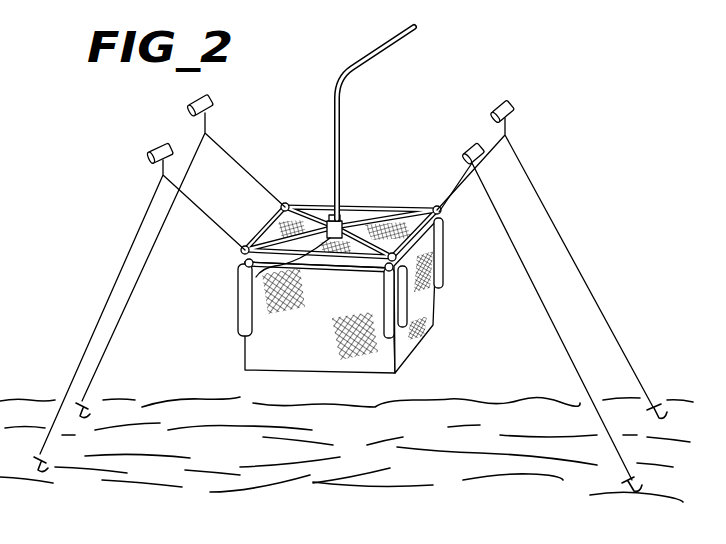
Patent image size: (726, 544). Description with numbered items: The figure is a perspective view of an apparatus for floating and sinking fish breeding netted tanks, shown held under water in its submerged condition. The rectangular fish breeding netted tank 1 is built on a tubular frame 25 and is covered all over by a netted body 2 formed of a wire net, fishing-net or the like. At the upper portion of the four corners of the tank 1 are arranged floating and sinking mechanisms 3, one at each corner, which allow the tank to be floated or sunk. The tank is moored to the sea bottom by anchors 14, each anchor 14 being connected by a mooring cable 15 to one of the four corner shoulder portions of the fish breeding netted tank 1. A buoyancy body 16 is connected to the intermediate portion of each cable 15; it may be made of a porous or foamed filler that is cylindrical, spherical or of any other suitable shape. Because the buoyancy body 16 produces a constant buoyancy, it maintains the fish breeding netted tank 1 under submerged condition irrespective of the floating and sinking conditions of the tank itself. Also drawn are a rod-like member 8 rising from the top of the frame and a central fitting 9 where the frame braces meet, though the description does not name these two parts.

The fish breeding netted tank 1 is at (376, 203).
The netted body 2 is at (340, 333).
The floating and sinking mechanisms 3 is at (405, 307).
The handle rod 8 is at (362, 62).
The central hub 9 is at (327, 226).
The anchor 14 is at (663, 397).
The mooring cable 15 is at (590, 280).
The buoyancy body 16 is at (513, 110).
The tubular frame 25 is at (247, 264).